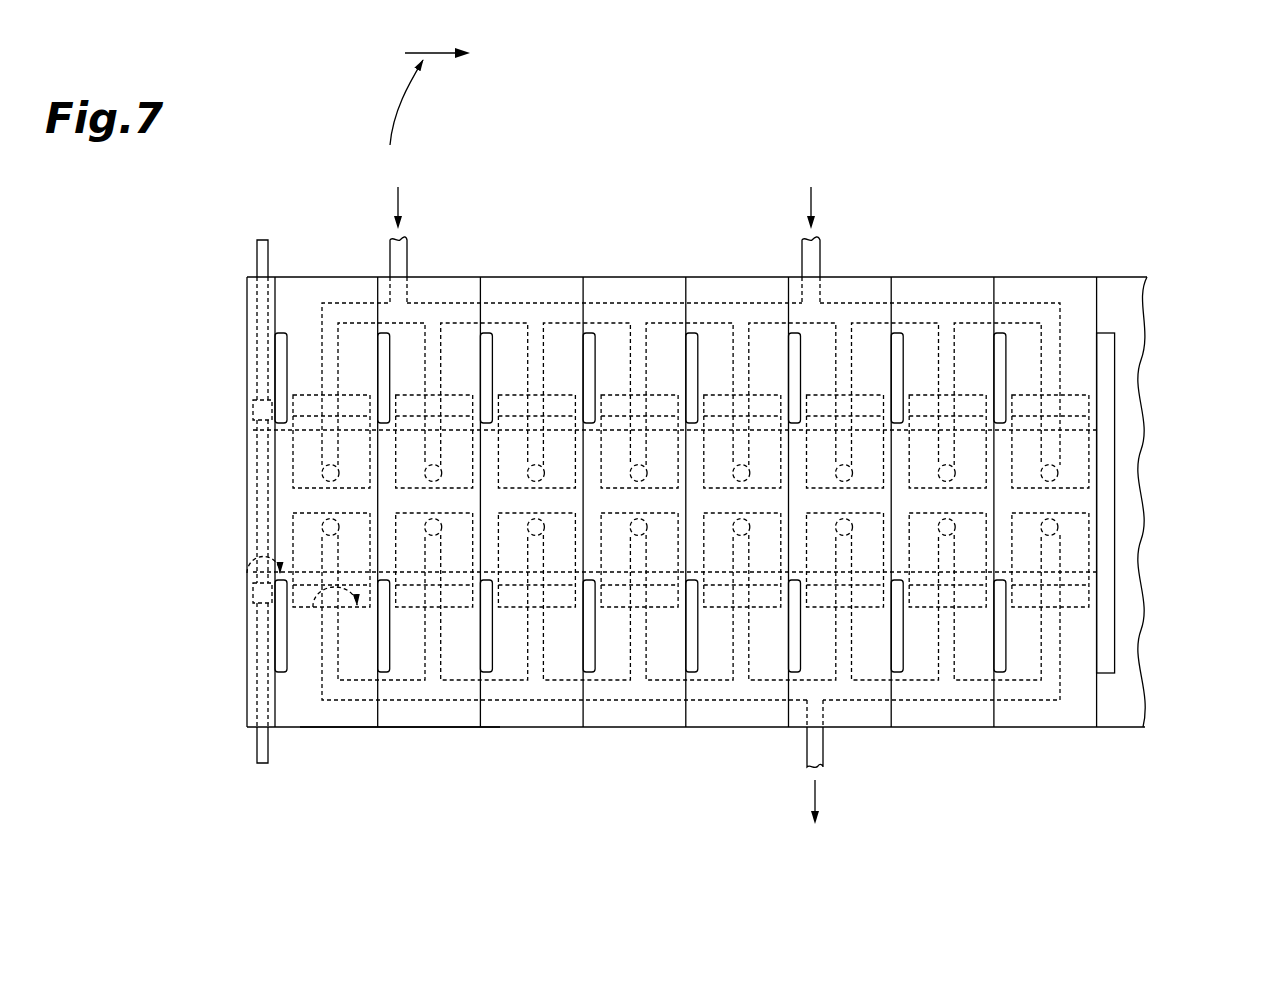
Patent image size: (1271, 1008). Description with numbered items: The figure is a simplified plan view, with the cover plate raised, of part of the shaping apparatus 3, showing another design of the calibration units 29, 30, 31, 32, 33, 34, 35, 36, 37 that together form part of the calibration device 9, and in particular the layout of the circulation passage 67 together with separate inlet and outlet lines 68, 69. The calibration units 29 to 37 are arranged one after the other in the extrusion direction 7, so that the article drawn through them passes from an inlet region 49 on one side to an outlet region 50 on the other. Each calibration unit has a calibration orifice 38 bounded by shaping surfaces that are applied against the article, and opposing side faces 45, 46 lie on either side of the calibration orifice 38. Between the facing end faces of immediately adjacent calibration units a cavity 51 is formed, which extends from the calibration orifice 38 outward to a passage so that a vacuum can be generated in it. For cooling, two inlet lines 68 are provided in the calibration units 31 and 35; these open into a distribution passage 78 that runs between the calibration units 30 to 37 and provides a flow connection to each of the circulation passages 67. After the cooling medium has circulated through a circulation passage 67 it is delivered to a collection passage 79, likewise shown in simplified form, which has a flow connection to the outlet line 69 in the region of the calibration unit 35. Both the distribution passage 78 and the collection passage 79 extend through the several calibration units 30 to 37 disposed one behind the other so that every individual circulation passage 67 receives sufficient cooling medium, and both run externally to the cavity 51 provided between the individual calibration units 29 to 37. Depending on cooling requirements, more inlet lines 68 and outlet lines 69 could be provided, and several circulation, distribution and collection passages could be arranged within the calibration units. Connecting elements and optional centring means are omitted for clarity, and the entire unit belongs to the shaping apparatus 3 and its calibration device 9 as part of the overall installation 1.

The fuel cell stack 1 is at (1166, 184).
The shaping apparatus 3 is at (1138, 156).
The extrusion direction 7 is at (421, 111).
The calibration device 9 is at (1094, 179).
The calibration unit 29 is at (252, 313).
The calibration unit 30 is at (348, 277).
The calibration unit 31 is at (452, 277).
The calibration unit 32 is at (557, 290).
The calibration unit 33 is at (660, 292).
The calibration unit 34 is at (738, 292).
The calibration unit 35 is at (850, 290).
The calibration unit 36 is at (930, 290).
The calibration unit 37 is at (1020, 292).
The calibration orifice 38 is at (247, 567).
The side face 45 is at (299, 274).
The side face 46 is at (397, 730).
The inlet region 49 is at (237, 430).
The outlet region 50 is at (1129, 476).
The cavity 51 is at (690, 353).
The circulation passage 67 is at (320, 592).
The inlet line 68 is at (401, 251).
The outlet line 69 is at (810, 750).
The distribution passage 78 is at (713, 318).
The collection passage 79 is at (612, 684).